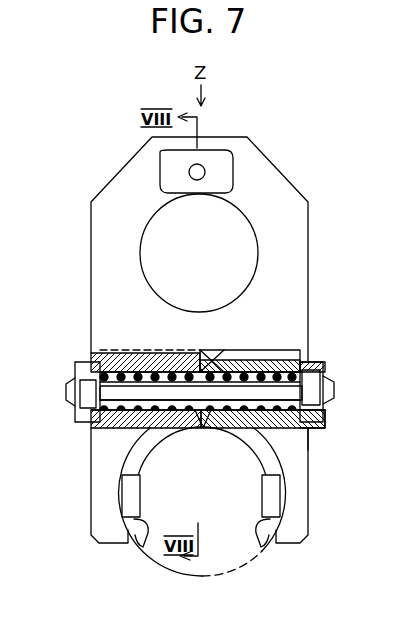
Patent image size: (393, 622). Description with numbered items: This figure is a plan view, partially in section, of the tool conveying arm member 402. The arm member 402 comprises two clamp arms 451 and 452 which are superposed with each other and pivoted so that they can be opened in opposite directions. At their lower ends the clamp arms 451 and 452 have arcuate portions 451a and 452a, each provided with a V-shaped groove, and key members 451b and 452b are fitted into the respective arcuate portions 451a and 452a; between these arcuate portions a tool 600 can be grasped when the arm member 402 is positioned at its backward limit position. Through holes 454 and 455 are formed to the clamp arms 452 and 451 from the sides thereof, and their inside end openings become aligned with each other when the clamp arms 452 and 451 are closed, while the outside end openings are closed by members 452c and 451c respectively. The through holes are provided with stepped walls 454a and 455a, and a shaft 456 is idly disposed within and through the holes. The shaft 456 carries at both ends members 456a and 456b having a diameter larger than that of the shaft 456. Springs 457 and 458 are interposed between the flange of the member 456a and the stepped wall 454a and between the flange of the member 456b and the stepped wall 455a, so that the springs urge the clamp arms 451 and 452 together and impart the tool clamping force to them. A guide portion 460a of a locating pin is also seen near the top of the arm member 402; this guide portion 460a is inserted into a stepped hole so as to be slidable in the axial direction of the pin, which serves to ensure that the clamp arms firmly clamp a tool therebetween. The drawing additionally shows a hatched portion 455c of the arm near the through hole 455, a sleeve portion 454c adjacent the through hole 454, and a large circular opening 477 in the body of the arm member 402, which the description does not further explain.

The tool conveying arm member 402 is at (112, 198).
The guide portion 460a is at (204, 178).
The circular opening 477 is at (152, 257).
The left bearing sleeve 454c is at (105, 370).
The stepped wall 454a is at (185, 367).
The stepped wall 455a is at (222, 363).
The spring 458 is at (304, 362).
The member 456a is at (75, 382).
The member 456b is at (323, 382).
The member 452c is at (67, 402).
The member 451c is at (328, 392).
The spring 457 is at (162, 410).
The shaft 456 is at (232, 410).
The through hole 454 is at (120, 430).
The through hole 455 is at (296, 438).
The right block flange 455c is at (305, 421).
The tool 600 is at (227, 568).
The clamp arm 452 is at (98, 508).
The clamp arm 451 is at (300, 508).
The key member 451b is at (134, 503).
The key member 452b is at (263, 499).
The arcuate portion 452a is at (147, 535).
The arcuate portion 451a is at (271, 537).